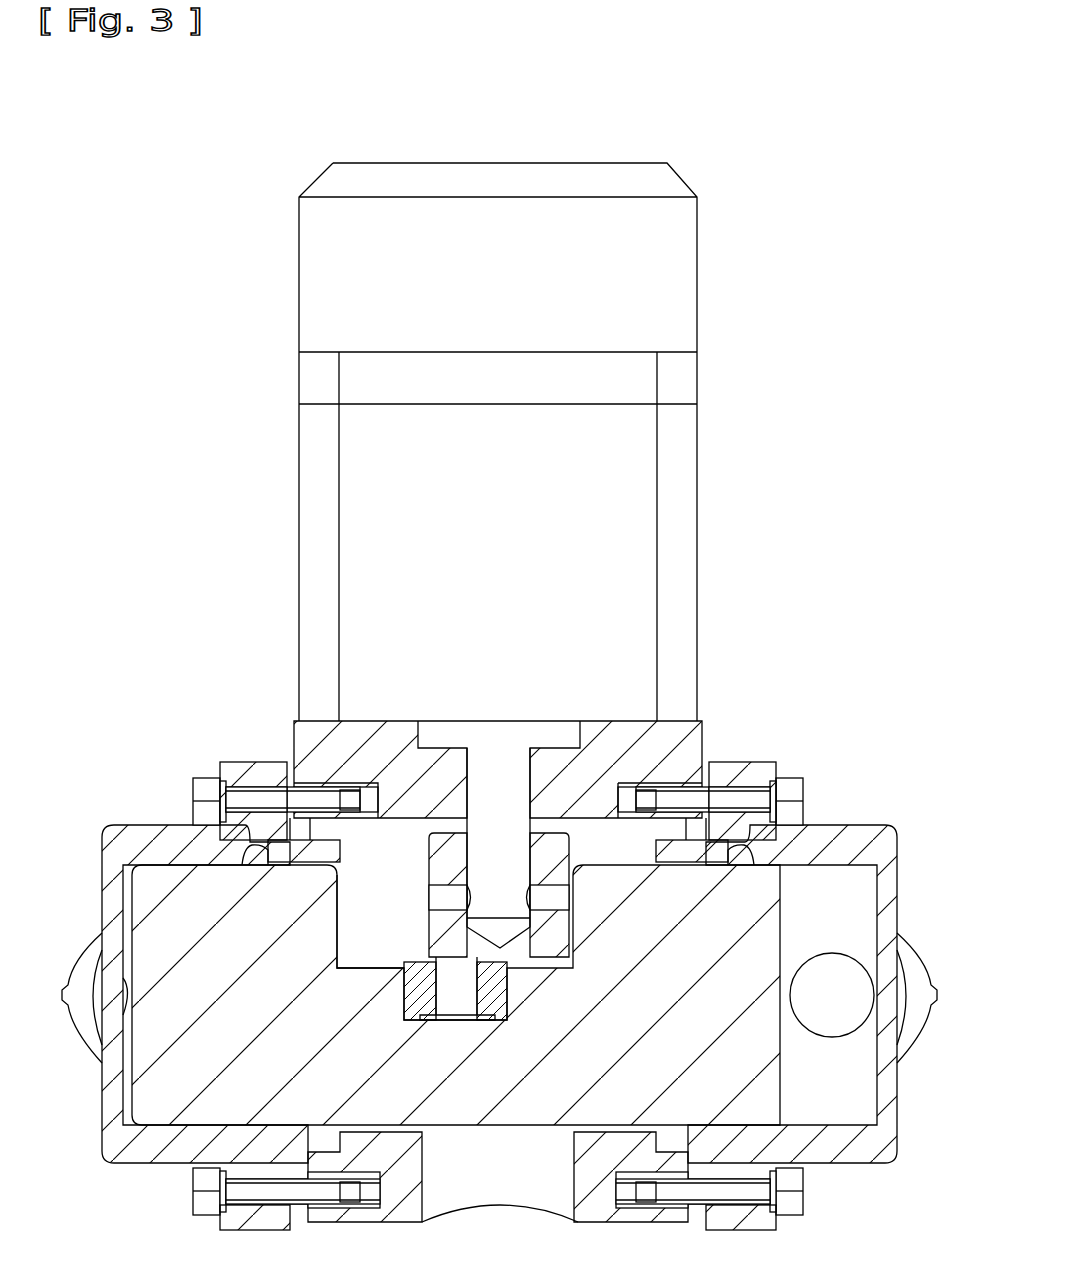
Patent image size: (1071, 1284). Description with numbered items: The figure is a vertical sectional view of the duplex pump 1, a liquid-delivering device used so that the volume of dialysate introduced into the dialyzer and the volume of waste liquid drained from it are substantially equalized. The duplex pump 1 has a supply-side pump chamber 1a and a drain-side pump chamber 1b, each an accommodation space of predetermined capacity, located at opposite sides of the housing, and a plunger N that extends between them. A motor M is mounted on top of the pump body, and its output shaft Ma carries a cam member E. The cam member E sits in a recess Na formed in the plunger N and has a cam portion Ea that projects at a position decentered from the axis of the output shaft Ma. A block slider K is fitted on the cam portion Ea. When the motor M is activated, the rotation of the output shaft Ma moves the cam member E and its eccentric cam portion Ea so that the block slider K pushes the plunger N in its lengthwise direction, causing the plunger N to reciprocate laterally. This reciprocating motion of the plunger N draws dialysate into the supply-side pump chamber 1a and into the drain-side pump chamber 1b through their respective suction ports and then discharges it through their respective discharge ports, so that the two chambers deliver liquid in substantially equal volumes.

The duplex pump 1 is at (190, 683).
The supply-side pump chamber 1a is at (840, 893).
The drain-side pump chamber 1b is at (165, 872).
The motor M is at (697, 303).
The output shaft Ma is at (478, 863).
The cam member E is at (445, 838).
The cam portion Ea is at (445, 1002).
The block slider K is at (421, 966).
The plunger N is at (145, 1108).
The recess Na is at (342, 940).